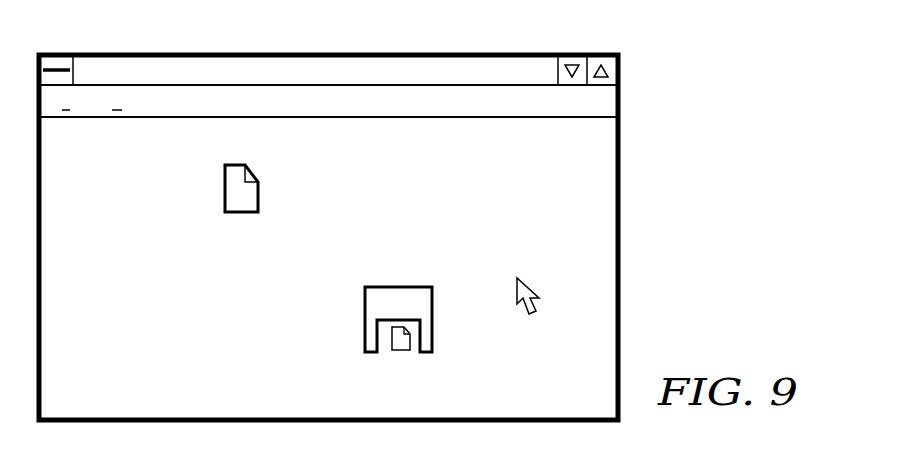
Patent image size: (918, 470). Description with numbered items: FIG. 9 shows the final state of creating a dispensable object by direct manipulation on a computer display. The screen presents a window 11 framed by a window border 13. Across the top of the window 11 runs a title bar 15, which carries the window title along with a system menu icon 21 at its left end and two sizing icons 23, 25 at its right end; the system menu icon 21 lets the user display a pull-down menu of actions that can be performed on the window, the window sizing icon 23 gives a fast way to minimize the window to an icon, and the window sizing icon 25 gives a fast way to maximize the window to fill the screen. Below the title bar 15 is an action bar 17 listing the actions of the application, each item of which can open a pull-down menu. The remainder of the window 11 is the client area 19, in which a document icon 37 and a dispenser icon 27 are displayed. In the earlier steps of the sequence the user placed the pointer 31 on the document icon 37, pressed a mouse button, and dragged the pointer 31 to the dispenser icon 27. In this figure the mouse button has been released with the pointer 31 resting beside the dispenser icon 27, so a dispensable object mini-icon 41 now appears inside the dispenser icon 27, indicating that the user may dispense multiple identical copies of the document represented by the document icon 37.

The window 11 is at (655, 124).
The window border 13 is at (621, 233).
The title bar 15 is at (510, 53).
The action bar 17 is at (503, 120).
The client area 19 is at (116, 387).
The system menu icon 21 is at (52, 55).
The window sizing icon 23 is at (567, 53).
The window sizing icon 25 is at (607, 53).
The dispenser icon 27 is at (432, 298).
The pointer 31 is at (534, 305).
The document icon 37 is at (252, 178).
The dispensable object mini-icon 41 is at (410, 342).